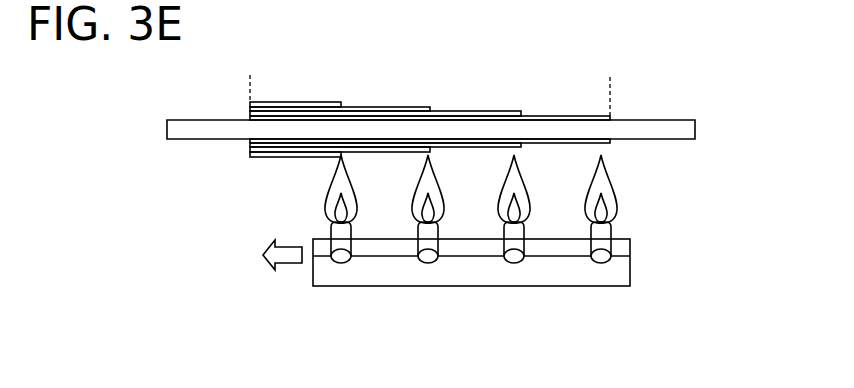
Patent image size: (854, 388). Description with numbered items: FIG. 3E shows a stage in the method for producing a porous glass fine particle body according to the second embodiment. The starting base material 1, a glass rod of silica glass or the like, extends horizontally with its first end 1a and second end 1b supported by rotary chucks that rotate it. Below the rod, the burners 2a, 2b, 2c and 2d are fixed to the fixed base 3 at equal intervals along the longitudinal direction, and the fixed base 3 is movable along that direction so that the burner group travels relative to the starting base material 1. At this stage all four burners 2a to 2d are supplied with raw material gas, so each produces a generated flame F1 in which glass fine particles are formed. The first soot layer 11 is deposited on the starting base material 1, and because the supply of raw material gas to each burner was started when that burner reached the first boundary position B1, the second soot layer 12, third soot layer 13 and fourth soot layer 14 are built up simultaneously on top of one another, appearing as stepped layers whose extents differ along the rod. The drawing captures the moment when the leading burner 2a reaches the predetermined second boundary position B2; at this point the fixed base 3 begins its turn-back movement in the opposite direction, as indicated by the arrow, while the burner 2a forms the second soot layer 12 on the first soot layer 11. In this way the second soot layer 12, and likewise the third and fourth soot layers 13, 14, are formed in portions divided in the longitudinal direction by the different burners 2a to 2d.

The starting base material 1 is at (439, 108).
The first end 1a is at (167, 126).
The second end 1b is at (697, 129).
The first soot layer 11 is at (612, 119).
The second soot layer 12 is at (523, 114).
The third soot layer 13 is at (432, 108).
The fourth soot layer 14 is at (343, 103).
The burner 2a is at (593, 249).
The burner 2b is at (506, 249).
The burner 2c is at (420, 249).
The burner 2d is at (333, 249).
The fixed base 3 is at (612, 278).
The first boundary position B1 is at (251, 73).
The second boundary position B2 is at (613, 80).
The generated flame F1 is at (354, 200).